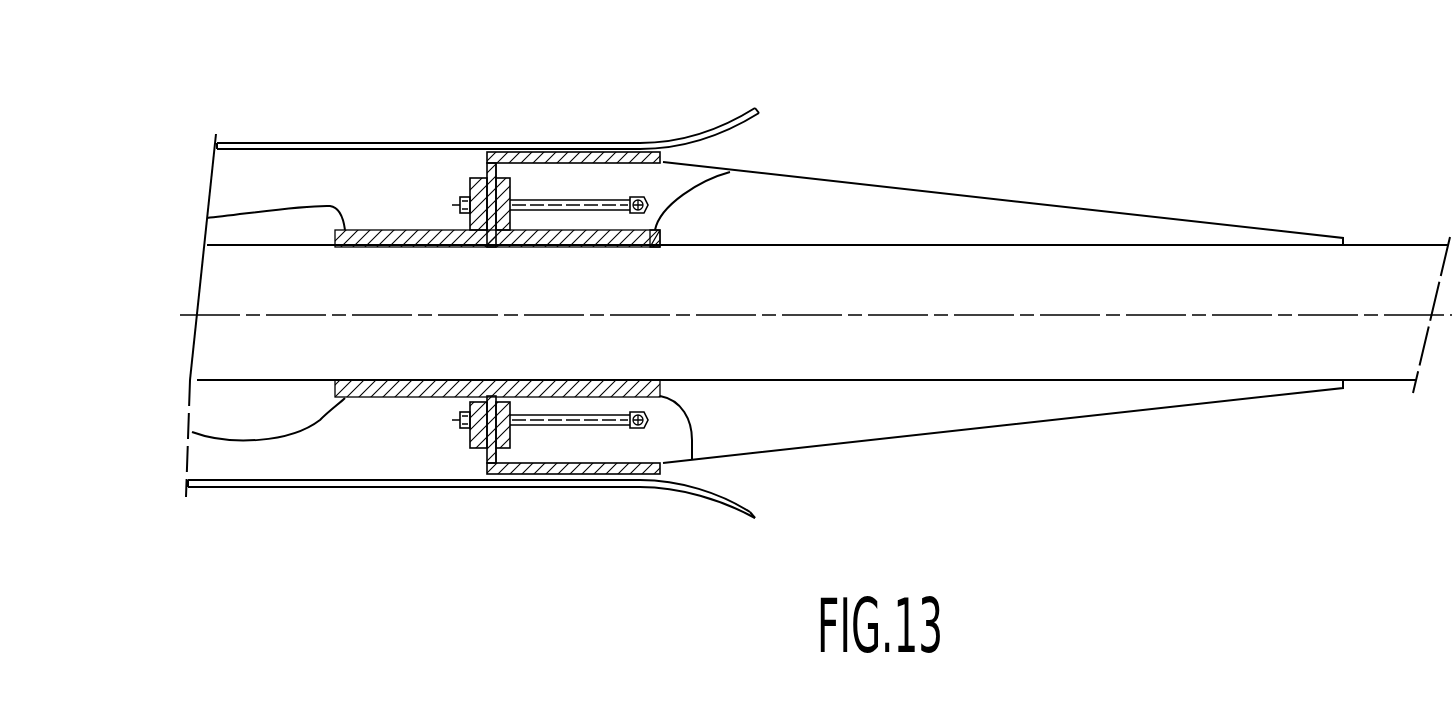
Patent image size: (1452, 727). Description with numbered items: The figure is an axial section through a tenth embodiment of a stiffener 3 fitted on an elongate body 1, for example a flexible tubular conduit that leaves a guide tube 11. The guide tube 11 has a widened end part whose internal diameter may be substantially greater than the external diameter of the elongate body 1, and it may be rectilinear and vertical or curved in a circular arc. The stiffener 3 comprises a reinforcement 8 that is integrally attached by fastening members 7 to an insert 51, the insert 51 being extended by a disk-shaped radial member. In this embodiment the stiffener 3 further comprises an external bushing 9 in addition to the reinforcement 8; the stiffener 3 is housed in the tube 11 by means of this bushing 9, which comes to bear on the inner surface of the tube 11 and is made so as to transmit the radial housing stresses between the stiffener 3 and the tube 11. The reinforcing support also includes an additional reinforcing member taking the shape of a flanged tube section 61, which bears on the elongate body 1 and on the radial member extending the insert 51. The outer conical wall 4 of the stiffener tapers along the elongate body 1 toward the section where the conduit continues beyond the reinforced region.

The elongate body 1 is at (1393, 245).
The stiffener 3 is at (950, 162).
The conical wall 4 is at (840, 178).
The fastening members 7 is at (455, 203).
The reinforcement 8 is at (613, 199).
The external bushing 9 is at (563, 151).
The guide tube 11 is at (723, 122).
The insert 51 is at (730, 172).
The flanged tube section 61 is at (207, 219).